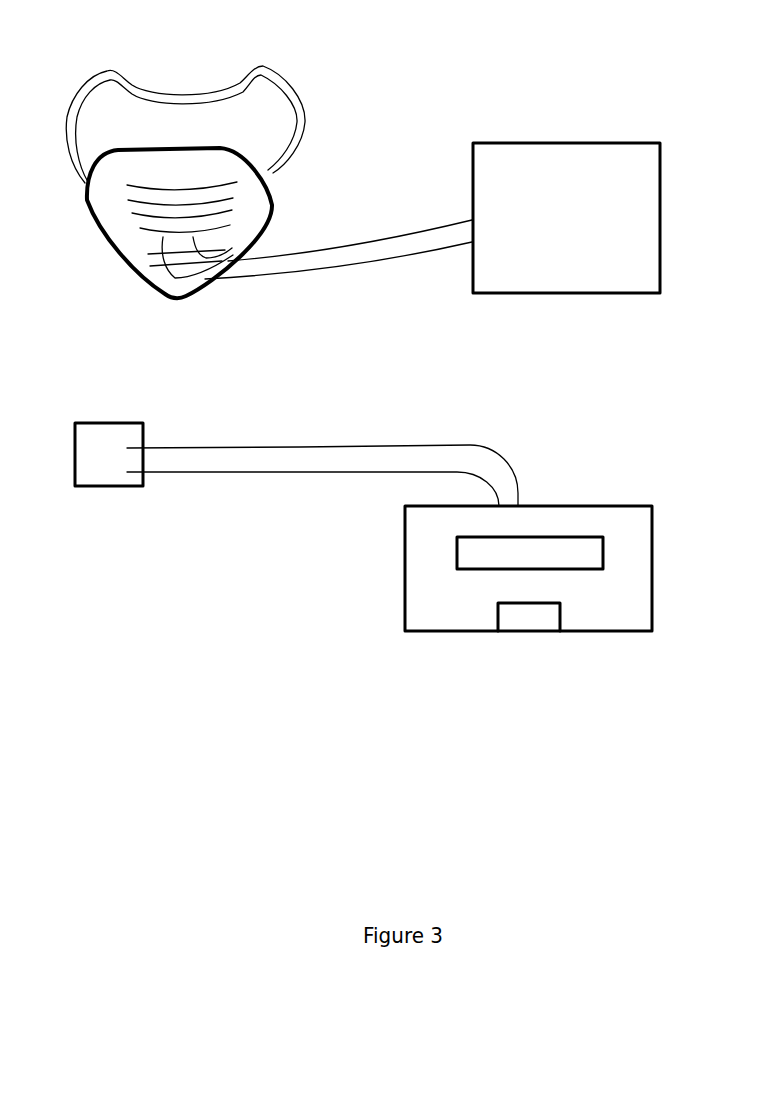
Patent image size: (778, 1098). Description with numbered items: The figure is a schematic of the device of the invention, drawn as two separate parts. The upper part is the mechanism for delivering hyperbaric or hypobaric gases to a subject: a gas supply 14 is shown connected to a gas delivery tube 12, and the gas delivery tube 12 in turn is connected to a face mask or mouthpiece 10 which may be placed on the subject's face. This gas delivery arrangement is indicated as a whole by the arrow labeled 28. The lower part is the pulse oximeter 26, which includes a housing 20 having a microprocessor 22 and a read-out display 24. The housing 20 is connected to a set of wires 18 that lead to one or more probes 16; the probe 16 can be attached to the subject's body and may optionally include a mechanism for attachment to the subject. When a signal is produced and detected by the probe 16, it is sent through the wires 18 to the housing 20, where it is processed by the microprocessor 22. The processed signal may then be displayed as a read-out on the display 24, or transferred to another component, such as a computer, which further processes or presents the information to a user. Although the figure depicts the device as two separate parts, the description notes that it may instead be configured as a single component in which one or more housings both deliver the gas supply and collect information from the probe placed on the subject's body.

The face mask or mouthpiece 10 is at (102, 240).
The gas delivery tube 12 is at (333, 270).
The gas supply 14 is at (555, 293).
The probe 16 is at (118, 423).
The wires 18 is at (295, 442).
The housing 20 is at (582, 506).
The microprocessor 22 is at (531, 623).
The read-out display 24 is at (582, 553).
The pulse oximeter 26 is at (296, 538).
The gas delivery system 28 is at (436, 106).